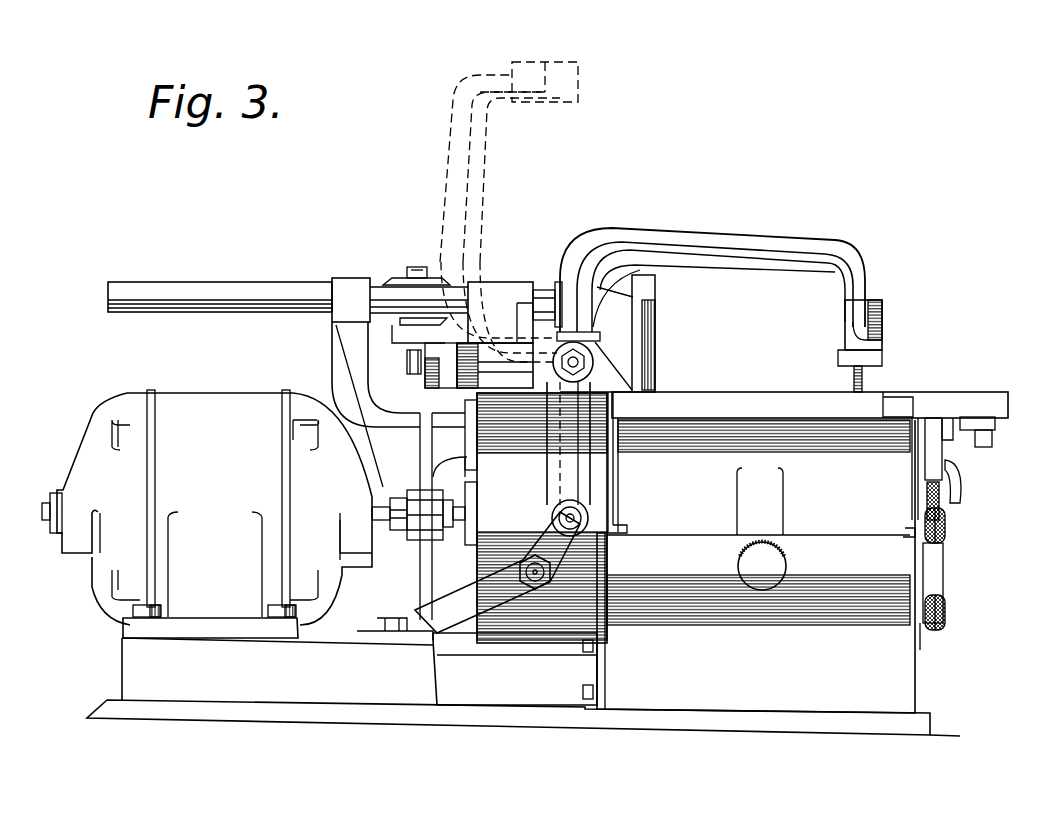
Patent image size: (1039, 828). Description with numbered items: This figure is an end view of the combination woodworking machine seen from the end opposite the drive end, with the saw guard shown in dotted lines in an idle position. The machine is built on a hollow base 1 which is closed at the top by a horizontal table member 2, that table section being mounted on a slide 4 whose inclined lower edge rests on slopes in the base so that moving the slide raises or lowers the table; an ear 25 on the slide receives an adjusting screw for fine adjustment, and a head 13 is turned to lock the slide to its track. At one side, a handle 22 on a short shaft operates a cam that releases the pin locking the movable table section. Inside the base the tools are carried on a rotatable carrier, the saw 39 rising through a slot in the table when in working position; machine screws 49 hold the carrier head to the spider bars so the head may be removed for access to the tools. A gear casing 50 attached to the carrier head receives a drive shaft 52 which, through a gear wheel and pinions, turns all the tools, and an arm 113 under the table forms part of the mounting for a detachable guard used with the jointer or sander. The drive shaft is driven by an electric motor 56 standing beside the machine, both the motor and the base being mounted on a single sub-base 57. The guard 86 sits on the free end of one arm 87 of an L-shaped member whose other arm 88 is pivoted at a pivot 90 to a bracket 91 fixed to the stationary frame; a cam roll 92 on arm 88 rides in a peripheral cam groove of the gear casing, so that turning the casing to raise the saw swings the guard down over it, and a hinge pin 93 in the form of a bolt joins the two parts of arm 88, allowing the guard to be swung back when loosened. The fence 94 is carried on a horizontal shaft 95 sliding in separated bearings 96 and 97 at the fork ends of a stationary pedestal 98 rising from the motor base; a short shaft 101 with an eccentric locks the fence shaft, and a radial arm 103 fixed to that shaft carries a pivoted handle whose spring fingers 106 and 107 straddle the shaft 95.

The hollow base 1 is at (895, 688).
The table member 2 is at (880, 393).
The slide 4 is at (758, 522).
The head 13 is at (927, 498).
The handle 22 is at (962, 487).
The ear 25 is at (775, 568).
The saw 39 is at (853, 378).
The machine screws 49 is at (947, 530).
The gear casing 50 is at (536, 518).
The drive shaft 52 is at (388, 508).
The electric motor 56 is at (237, 512).
The sub-base 57 is at (526, 728).
The guard 86 is at (578, 85).
The arm 87 is at (486, 173).
The arm 88 is at (546, 530).
The pivot 90 is at (522, 569).
The bracket 91 is at (497, 572).
The cam roll 92 is at (590, 510).
The hinge pin 93 is at (597, 362).
The work guide or fence 94 is at (650, 315).
The horizontal shaft 95 is at (176, 274).
The bearing 96 is at (504, 290).
The bearing 97 is at (342, 278).
The pedestal 98 is at (399, 481).
The short shaft 101 is at (410, 366).
The radial arm 103 is at (420, 345).
The spring finger 106 is at (386, 270).
The spring finger 107 is at (400, 330).
The arm 113 is at (965, 443).